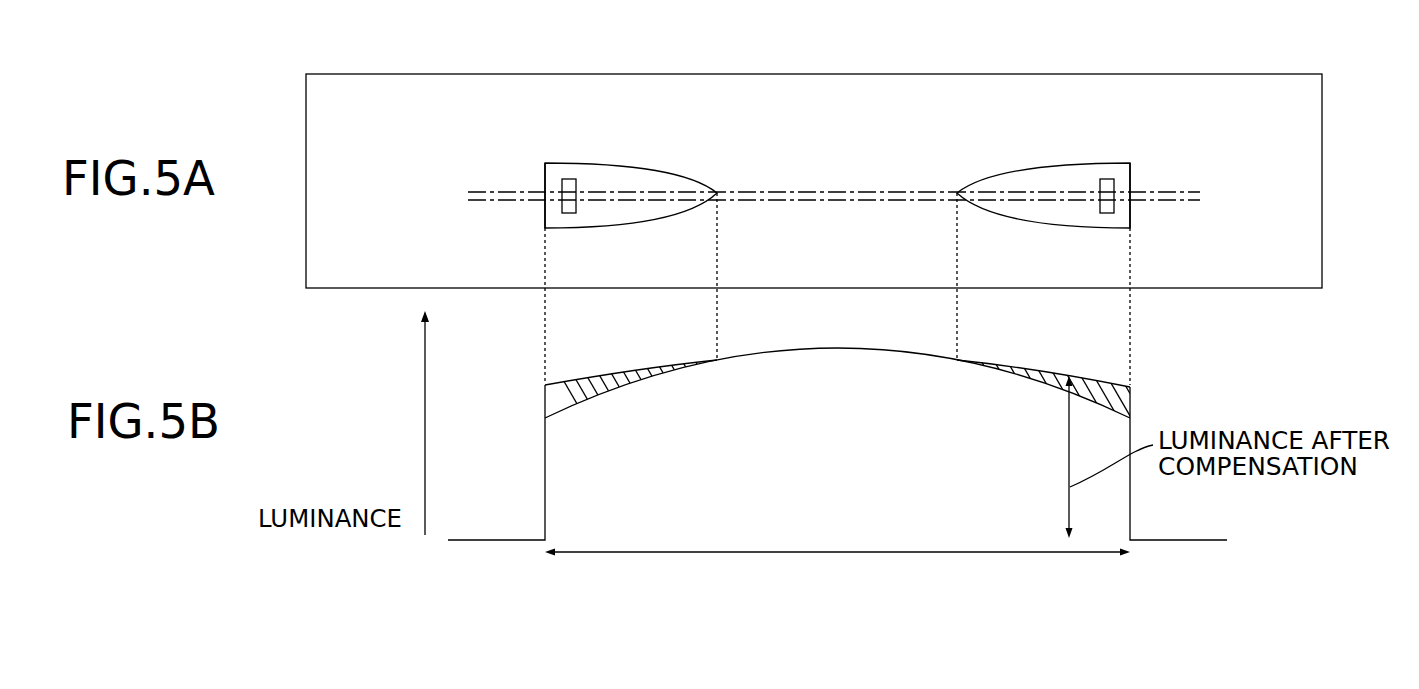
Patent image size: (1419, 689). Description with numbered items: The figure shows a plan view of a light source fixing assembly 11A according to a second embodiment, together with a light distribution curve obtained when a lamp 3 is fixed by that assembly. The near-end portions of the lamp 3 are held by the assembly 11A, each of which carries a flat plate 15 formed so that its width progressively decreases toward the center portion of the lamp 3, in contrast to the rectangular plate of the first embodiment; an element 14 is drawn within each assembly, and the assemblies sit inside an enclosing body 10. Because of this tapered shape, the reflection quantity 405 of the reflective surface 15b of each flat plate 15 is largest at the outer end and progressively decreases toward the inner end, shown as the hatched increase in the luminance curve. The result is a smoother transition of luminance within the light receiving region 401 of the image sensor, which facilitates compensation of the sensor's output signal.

In FIG. 5A, the light guide plate 10 is at (955, 73).
In FIG. 5A, the lamp 3 is at (901, 190).
In FIG. 5A, the light source fixing assembly 11A is at (839, 155).
In FIG. 5A, the light emitting element 14 is at (563, 189).
In FIG. 5A, the flat plate 15 is at (604, 160).
In FIG. 5A, the reflective surface 15b is at (572, 166).
In FIG. 5B, the reflection quantity 405 is at (600, 393).
In FIG. 5B, the light receiving region 401 is at (688, 553).